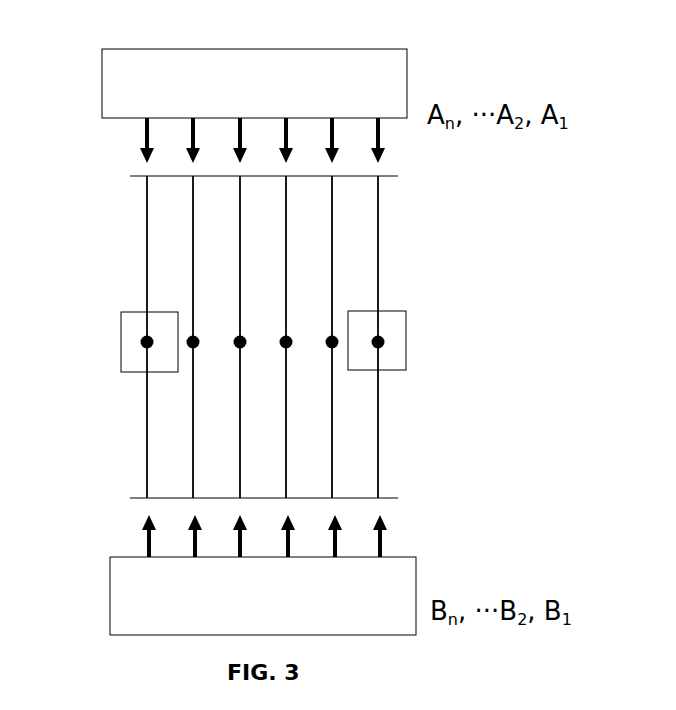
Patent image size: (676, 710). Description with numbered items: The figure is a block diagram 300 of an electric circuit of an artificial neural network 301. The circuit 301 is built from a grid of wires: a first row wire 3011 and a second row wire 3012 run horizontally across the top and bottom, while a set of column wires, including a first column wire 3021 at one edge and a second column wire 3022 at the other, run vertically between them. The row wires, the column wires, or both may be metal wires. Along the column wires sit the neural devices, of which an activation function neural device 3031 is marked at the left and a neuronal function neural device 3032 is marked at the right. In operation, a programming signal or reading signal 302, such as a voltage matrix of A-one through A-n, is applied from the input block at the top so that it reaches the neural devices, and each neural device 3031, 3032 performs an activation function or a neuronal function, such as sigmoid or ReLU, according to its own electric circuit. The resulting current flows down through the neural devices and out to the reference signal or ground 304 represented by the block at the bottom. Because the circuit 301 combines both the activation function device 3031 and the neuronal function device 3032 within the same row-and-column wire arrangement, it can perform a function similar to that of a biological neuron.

The diagram 300 is at (272, 31).
The electric circuit of an artificial neural network 301 is at (424, 189).
The programming signal or reading signal 302 is at (407, 82).
The reference signal or ground 304 is at (418, 566).
The first row wire 3011 is at (180, 176).
The second row wire 3012 is at (167, 499).
The first column wire 3021 is at (146, 471).
The second column wire 3022 is at (382, 462).
The neural device 3031 is at (145, 347).
The neuronal function neural device 3032 is at (382, 346).